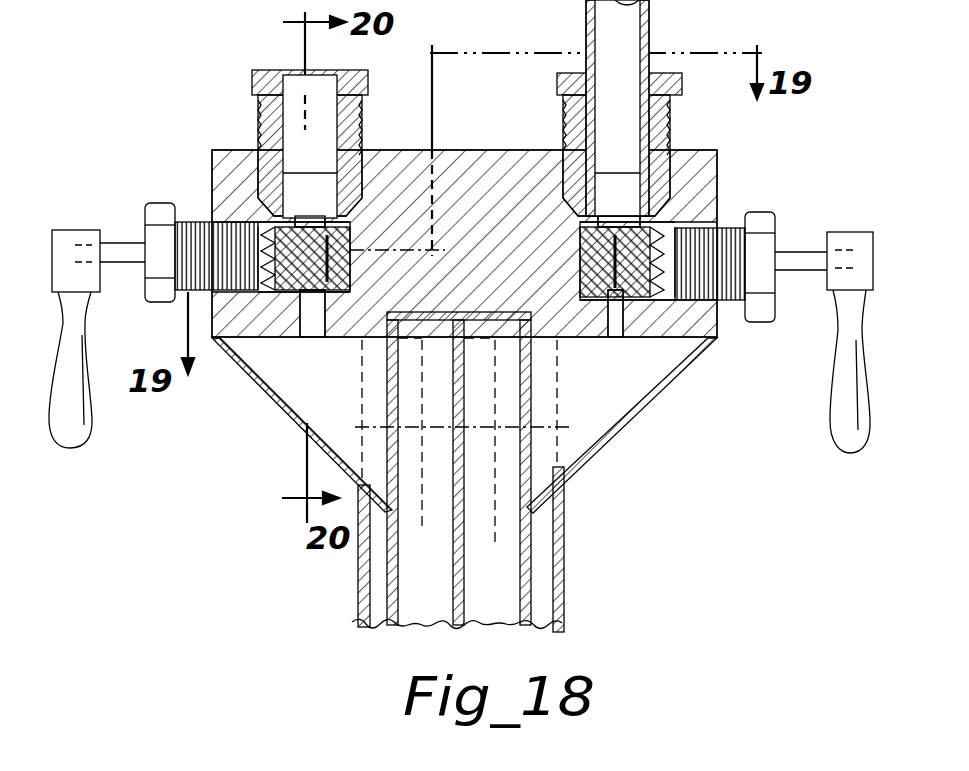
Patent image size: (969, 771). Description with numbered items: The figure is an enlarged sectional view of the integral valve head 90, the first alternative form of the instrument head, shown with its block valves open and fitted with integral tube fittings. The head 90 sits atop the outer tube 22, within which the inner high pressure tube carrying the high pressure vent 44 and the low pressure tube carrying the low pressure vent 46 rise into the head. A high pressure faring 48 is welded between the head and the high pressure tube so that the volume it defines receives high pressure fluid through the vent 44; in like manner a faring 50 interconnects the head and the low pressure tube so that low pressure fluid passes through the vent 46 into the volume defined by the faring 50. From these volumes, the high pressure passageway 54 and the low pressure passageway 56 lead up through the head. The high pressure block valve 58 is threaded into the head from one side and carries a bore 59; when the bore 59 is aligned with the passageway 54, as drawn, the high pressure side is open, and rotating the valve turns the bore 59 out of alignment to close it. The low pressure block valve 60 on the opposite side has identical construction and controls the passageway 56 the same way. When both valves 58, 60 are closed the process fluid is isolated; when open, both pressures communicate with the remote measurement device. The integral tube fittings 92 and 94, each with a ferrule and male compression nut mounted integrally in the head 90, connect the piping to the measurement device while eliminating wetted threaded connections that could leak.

The outer tube 22 is at (563, 575).
The high pressure vent 44 is at (392, 482).
The low pressure vent 46 is at (525, 473).
The high pressure faring 48 is at (307, 427).
The low pressure faring 50 is at (655, 395).
The high pressure passageway 54 is at (312, 326).
The low pressure passageway 56 is at (606, 334).
The high pressure block valve 58 is at (90, 430).
The bore 59 is at (366, 192).
The low pressure block valve 60 is at (845, 358).
The integral valve head 90 is at (717, 192).
The integral tube fitting 92 is at (272, 195).
The integral tube fitting 94 is at (252, 68).